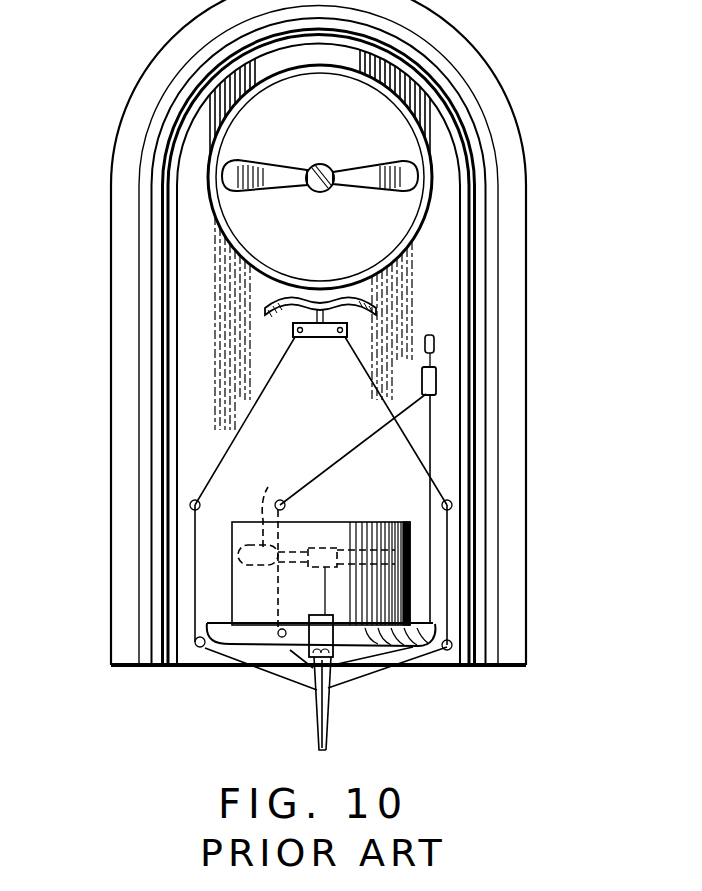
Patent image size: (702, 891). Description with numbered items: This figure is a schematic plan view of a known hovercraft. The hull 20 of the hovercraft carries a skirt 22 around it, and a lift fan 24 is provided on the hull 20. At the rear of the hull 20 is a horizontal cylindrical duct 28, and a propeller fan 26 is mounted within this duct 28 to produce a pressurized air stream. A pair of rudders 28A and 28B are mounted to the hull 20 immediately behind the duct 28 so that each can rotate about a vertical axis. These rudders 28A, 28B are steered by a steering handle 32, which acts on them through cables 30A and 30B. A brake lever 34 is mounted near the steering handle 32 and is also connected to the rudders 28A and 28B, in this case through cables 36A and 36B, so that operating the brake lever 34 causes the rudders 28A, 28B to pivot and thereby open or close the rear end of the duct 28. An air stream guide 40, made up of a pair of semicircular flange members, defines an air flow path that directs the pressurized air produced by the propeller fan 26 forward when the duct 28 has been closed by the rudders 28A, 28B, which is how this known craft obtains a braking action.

The hull 20 is at (452, 245).
The skirt 22 is at (118, 298).
The lift fan 24 is at (365, 166).
The propeller fan 26 is at (316, 546).
The horizontal cylindrical duct 28 is at (353, 540).
The rudder 28A is at (316, 735).
The rudder 28B is at (330, 735).
The cable 30A is at (190, 558).
The cable 30B is at (452, 540).
The steering handle 32 is at (345, 292).
The brake lever 34 is at (434, 352).
The cable 36A is at (337, 457).
The cable 36B is at (434, 421).
The air stream guide 40 is at (413, 648).